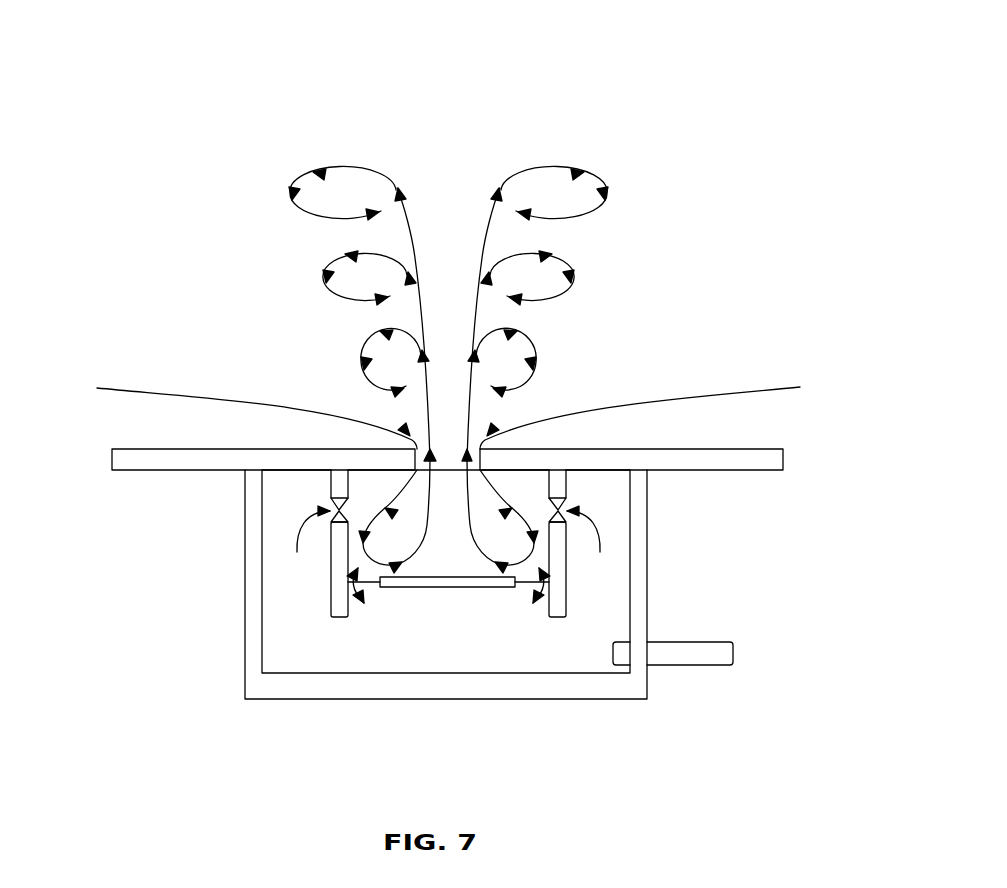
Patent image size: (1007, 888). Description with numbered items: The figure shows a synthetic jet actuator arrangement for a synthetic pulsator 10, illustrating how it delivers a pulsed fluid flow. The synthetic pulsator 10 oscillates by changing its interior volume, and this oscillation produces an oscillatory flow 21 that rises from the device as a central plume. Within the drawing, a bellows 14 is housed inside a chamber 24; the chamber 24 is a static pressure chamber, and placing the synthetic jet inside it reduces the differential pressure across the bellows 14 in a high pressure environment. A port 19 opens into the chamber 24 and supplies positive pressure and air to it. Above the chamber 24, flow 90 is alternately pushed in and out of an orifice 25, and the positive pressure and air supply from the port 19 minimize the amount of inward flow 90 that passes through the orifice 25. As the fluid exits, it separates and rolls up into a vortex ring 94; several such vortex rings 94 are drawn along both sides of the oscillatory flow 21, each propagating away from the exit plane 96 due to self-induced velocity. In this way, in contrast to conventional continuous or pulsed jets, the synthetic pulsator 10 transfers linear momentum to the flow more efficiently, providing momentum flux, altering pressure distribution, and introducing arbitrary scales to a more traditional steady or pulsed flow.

The synthetic pulsator 10 is at (757, 70).
The bellows 14 is at (450, 587).
The port 19 is at (717, 642).
The oscillatory flow 21 is at (360, 148).
The chamber 24 is at (243, 637).
The orifice 25 is at (483, 447).
The flow 90 is at (165, 388).
The vortex ring 94 is at (293, 187).
The exit plane 96 is at (112, 449).